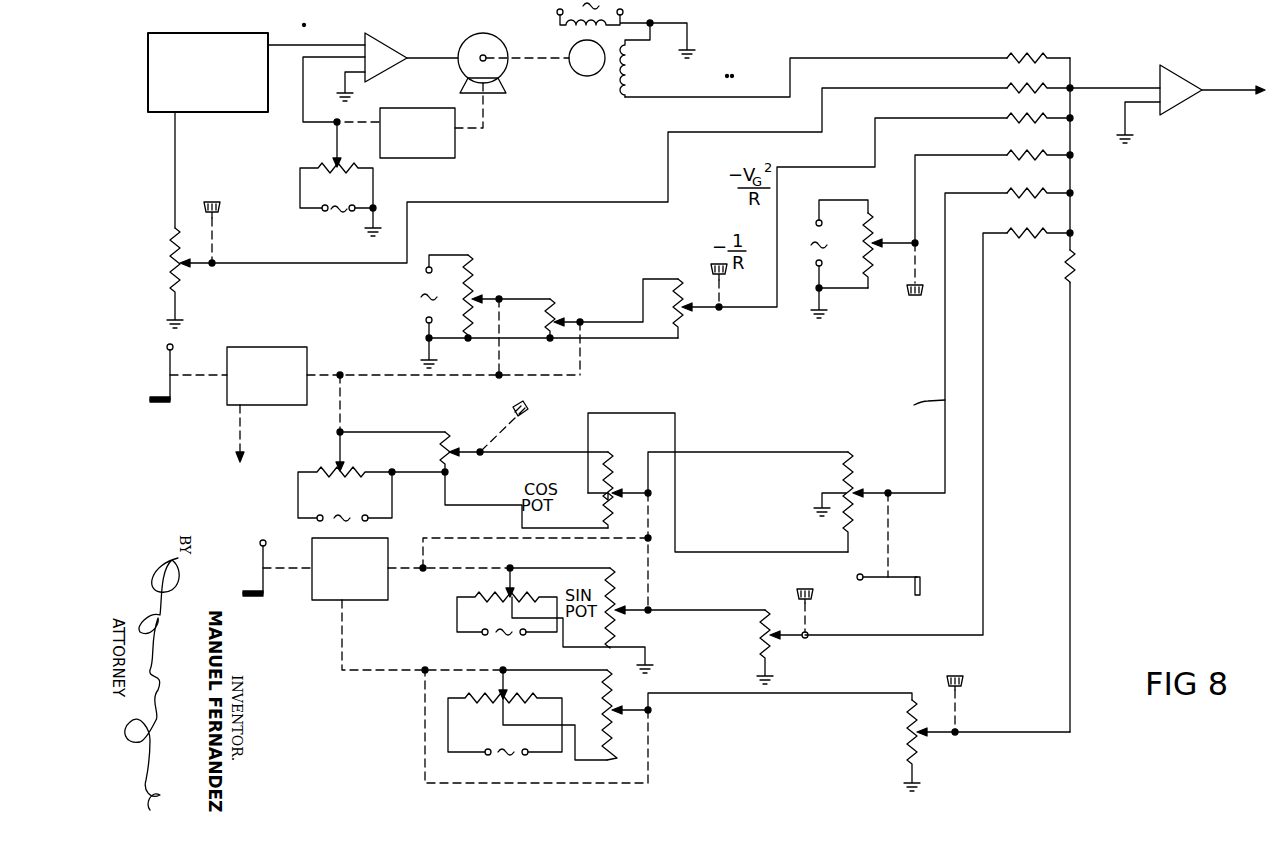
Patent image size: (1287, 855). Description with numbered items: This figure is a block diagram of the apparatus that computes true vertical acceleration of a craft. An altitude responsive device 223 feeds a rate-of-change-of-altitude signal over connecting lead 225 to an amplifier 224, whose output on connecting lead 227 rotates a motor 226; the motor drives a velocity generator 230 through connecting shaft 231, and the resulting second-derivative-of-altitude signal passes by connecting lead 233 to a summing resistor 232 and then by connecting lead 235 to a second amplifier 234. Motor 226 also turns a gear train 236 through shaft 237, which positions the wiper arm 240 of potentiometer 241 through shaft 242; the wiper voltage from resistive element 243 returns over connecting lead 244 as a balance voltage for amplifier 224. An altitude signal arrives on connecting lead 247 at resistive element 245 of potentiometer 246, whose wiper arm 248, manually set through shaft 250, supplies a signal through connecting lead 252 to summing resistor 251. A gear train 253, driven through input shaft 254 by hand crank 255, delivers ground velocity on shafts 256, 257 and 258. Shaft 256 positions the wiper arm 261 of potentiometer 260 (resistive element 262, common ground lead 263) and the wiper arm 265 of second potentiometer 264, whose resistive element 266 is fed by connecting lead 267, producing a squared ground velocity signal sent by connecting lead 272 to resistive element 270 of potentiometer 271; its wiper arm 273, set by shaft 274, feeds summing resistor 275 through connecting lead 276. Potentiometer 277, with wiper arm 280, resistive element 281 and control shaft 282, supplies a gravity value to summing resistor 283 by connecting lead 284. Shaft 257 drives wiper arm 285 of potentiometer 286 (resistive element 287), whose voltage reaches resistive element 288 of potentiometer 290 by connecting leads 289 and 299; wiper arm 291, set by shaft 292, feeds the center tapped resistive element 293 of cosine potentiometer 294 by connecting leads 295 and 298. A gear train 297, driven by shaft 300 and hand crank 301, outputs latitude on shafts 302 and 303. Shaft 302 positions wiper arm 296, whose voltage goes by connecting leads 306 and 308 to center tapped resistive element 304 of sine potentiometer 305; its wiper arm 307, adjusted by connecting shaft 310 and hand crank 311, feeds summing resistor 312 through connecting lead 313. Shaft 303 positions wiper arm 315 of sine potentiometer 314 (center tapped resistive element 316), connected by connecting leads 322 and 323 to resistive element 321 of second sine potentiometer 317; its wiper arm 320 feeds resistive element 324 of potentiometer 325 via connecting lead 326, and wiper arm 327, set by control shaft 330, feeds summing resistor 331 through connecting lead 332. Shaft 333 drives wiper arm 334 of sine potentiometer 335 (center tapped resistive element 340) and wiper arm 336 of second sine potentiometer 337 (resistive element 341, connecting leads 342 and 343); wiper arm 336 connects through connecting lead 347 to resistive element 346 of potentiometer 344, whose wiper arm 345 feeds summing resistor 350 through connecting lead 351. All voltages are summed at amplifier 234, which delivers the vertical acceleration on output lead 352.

The altitude responsive device 223 is at (175, 33).
The amplifier 224 is at (383, 38).
The connecting lead 225 is at (344, 42).
The motor 226 is at (502, 36).
The connecting lead 227 is at (430, 64).
The velocity generator 230 is at (626, 55).
The connecting shaft 231 is at (535, 52).
The summing resistor 232 is at (1019, 58).
The connecting lead 233 is at (898, 58).
The amplifier 234 is at (1184, 80).
The connecting lead 235 is at (1106, 88).
The gear train 236 is at (455, 146).
The shaft 237 is at (483, 118).
The wiper arm 240 is at (330, 149).
The potentiometer 241 is at (317, 196).
The shaft 242 is at (348, 115).
The resistive element 243 is at (344, 158).
The connecting lead 244 is at (298, 106).
The resistive element 245 is at (158, 296).
The potentiometer 246 is at (153, 278).
The connecting lead 247 is at (160, 185).
The wiper arm 248 is at (206, 266).
The shaft 250 is at (222, 240).
The summing resistor 251 is at (1011, 84).
The connecting lead 252 is at (850, 88).
The gear train 253 is at (278, 346).
The input shaft 254 is at (200, 374).
The hand crank 255 is at (172, 390).
The shaft 256 is at (386, 382).
The shaft 257 is at (340, 400).
The shaft 258 is at (240, 440).
The potentiometer 260 is at (549, 311).
The wiper arm 261 is at (496, 299).
The resistive element 262 is at (478, 250).
The common ground lead 263 is at (612, 338).
The second potentiometer 264 is at (572, 307).
The wiper arm 265 is at (588, 320).
The resistive element 266 is at (518, 337).
The connecting lead 267 is at (552, 300).
The resistive element 270 is at (688, 326).
The potentiometer 271 is at (715, 352).
The connecting lead 272 is at (649, 278).
The wiper arm 273 is at (702, 288).
The shaft 274 is at (722, 287).
The summing resistor 275 is at (1011, 114).
The connecting lead 276 is at (910, 118).
The potentiometer 277 is at (849, 259).
The wiper arm 280 is at (895, 239).
The resistive element 281 is at (858, 264).
The control shaft 282 is at (906, 258).
The summing resistor 283 is at (1016, 150).
The connecting lead 284 is at (941, 150).
The wiper arm 285 is at (348, 443).
The potentiometer 286 is at (368, 474).
The resistive element 287 is at (362, 480).
The resistive element 288 is at (461, 428).
The connecting lead 289 is at (406, 428).
The potentiometer 290 is at (475, 457).
The wiper arm 291 is at (468, 444).
The shaft 292 is at (513, 429).
The center tapped resistive element 293 is at (618, 465).
The cosine potentiometer 294 is at (586, 510).
The connecting lead 295 is at (531, 458).
The wiper arm 296 is at (636, 500).
The gear train 297 is at (330, 600).
The connecting lead 298 is at (486, 500).
The connecting lead 299 is at (414, 480).
The shaft 300 is at (296, 568).
The hand crank 301 is at (266, 585).
The shaft 302 is at (460, 530).
The shaft 303 is at (460, 564).
The center tapped resistive element 304 is at (852, 470).
The sine potentiometer 305 is at (797, 519).
The connecting lead 306 is at (728, 458).
The wiper arm 307 is at (874, 490).
The connecting lead 308 is at (712, 559).
The connecting shaft 310 is at (894, 528).
The hand crank 311 is at (902, 572).
The summing resistor 312 is at (1016, 188).
The connecting lead 313 is at (964, 190).
The sine potentiometer 314 is at (493, 606).
The wiper arm 315 is at (514, 586).
The center tapped resistive element 316 is at (490, 588).
The second sine potentiometer 317 is at (706, 598).
The wiper arm 320 is at (626, 598).
The resistive element 321 is at (604, 598).
The connecting lead 322 is at (586, 564).
The connecting lead 323 is at (562, 643).
The resistive element 324 is at (760, 632).
The potentiometer 325 is at (737, 658).
The connecting lead 326 is at (760, 602).
The wiper arm 327 is at (780, 644).
The control shaft 330 is at (810, 614).
The summing resistor 331 is at (1018, 227).
The connecting lead 332 is at (985, 284).
The shaft 333 is at (385, 670).
The wiper arm 334 is at (480, 680).
The sine potentiometer 335 is at (468, 724).
The wiper arm 336 is at (620, 716).
The second sine potentiometer 337 is at (668, 724).
The center tapped resistive element 340 is at (541, 692).
The resistive element 341 is at (608, 754).
The connecting lead 342 is at (540, 666).
The connecting lead 343 is at (576, 764).
The potentiometer 344 is at (883, 745).
The wiper arm 345 is at (937, 746).
The resistive element 346 is at (904, 748).
The connecting lead 347 is at (784, 694).
The summing resistor 350 is at (1076, 257).
The connecting lead 351 is at (1076, 413).
The output lead 352 is at (1233, 87).